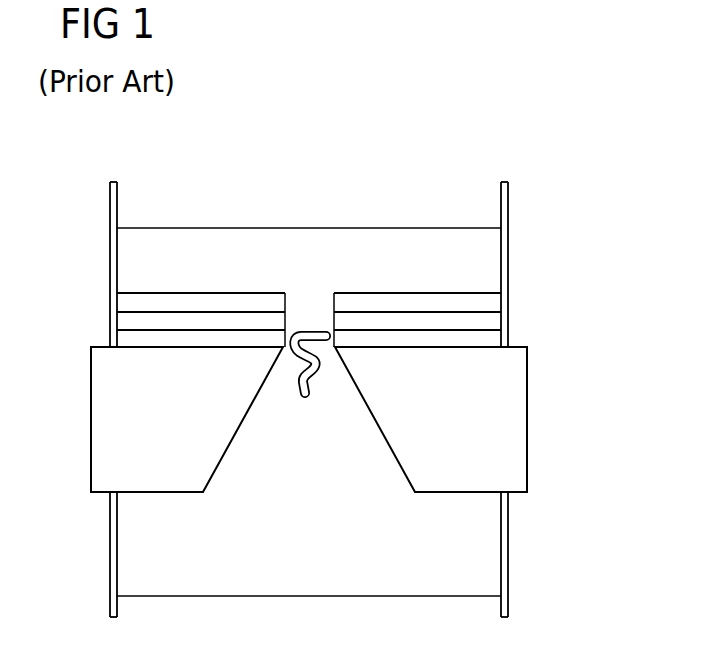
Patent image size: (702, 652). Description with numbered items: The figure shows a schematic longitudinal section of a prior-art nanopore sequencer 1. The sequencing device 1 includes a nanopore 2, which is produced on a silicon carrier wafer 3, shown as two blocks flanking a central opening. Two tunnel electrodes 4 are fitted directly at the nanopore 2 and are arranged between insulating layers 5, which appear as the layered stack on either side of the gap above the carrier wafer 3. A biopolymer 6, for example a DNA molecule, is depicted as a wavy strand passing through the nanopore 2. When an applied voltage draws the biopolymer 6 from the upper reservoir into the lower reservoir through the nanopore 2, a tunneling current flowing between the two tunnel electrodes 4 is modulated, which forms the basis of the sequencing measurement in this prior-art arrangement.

The nanopore sequencer 1 is at (452, 141).
The nanopore 2 is at (311, 298).
The silicon carrier wafer 3 is at (105, 452).
The tunnel electrodes 4 is at (127, 320).
The insulating layers 5 is at (127, 302).
The biopolymer 6 is at (319, 369).